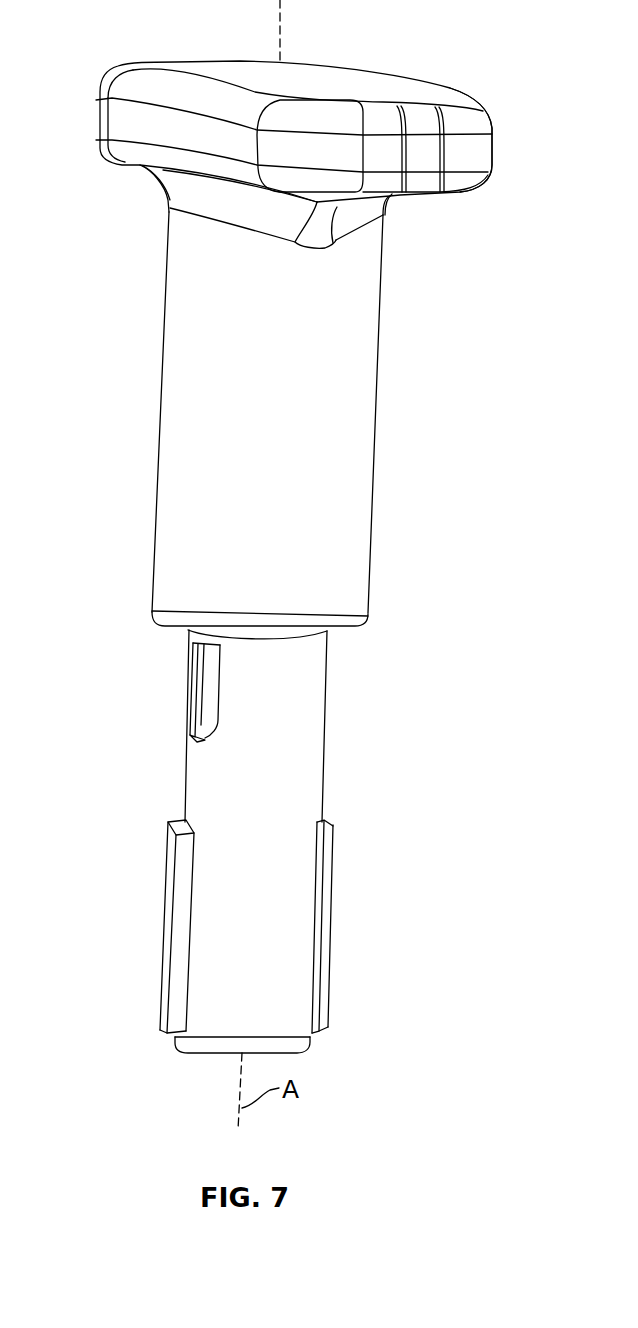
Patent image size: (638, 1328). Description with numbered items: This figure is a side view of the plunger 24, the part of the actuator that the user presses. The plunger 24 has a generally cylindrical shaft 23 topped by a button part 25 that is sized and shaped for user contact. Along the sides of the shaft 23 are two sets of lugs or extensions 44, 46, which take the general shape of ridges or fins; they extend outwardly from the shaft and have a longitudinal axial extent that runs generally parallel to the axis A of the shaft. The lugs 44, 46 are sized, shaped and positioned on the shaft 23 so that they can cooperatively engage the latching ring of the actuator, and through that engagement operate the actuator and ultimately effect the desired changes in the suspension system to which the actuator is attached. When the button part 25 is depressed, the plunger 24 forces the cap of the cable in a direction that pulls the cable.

The shaft 23 is at (350, 547).
The plunger 24 is at (172, 76).
The button part 25 is at (468, 182).
The lugs or extensions 44 is at (137, 659).
The lugs or extensions 46 is at (133, 890).